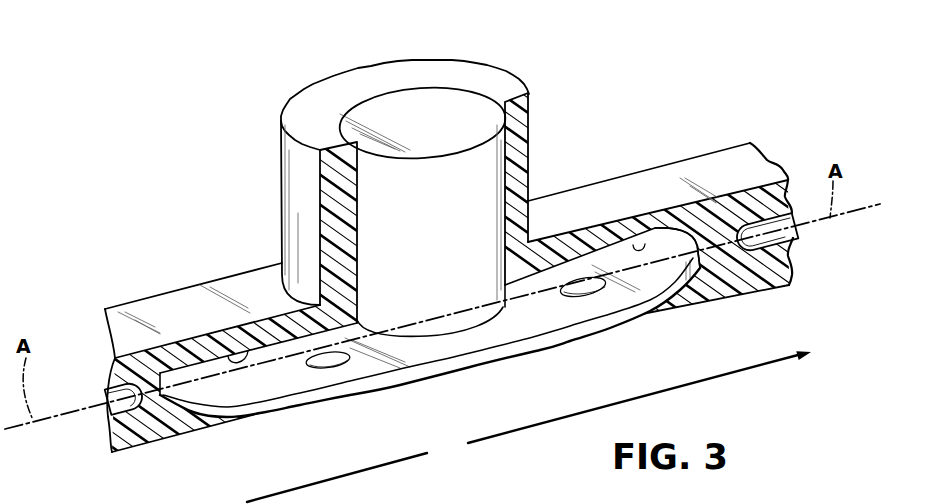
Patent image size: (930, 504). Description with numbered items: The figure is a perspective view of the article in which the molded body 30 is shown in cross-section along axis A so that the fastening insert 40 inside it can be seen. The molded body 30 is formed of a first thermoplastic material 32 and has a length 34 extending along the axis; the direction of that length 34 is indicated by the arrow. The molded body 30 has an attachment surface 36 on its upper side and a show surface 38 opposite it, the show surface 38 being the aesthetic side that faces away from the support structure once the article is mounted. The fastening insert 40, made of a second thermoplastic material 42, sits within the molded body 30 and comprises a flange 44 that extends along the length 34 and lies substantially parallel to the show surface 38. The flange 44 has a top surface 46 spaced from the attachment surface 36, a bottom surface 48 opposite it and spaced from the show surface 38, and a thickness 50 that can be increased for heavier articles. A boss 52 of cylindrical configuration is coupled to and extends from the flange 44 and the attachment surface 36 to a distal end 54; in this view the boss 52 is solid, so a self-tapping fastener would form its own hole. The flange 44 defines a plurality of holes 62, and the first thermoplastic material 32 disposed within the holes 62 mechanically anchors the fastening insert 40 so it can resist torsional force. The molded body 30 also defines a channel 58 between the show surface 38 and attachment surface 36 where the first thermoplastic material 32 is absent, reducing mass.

The molded body 30 is at (763, 122).
The first thermoplastic material 32 is at (727, 283).
The length 34 is at (529, 426).
The attachment surface 36 is at (172, 318).
The show surface 38 is at (190, 434).
The fastening insert 40 is at (537, 298).
The second thermoplastic material 42 is at (303, 193).
The flange 44 is at (347, 398).
The top surface 46 is at (553, 318).
The bottom surface 48 is at (607, 330).
The thickness 50 is at (499, 362).
The boss 52 is at (281, 147).
The distal end 54 is at (444, 110).
The channel 58 is at (112, 397).
The holes 62 is at (318, 352).